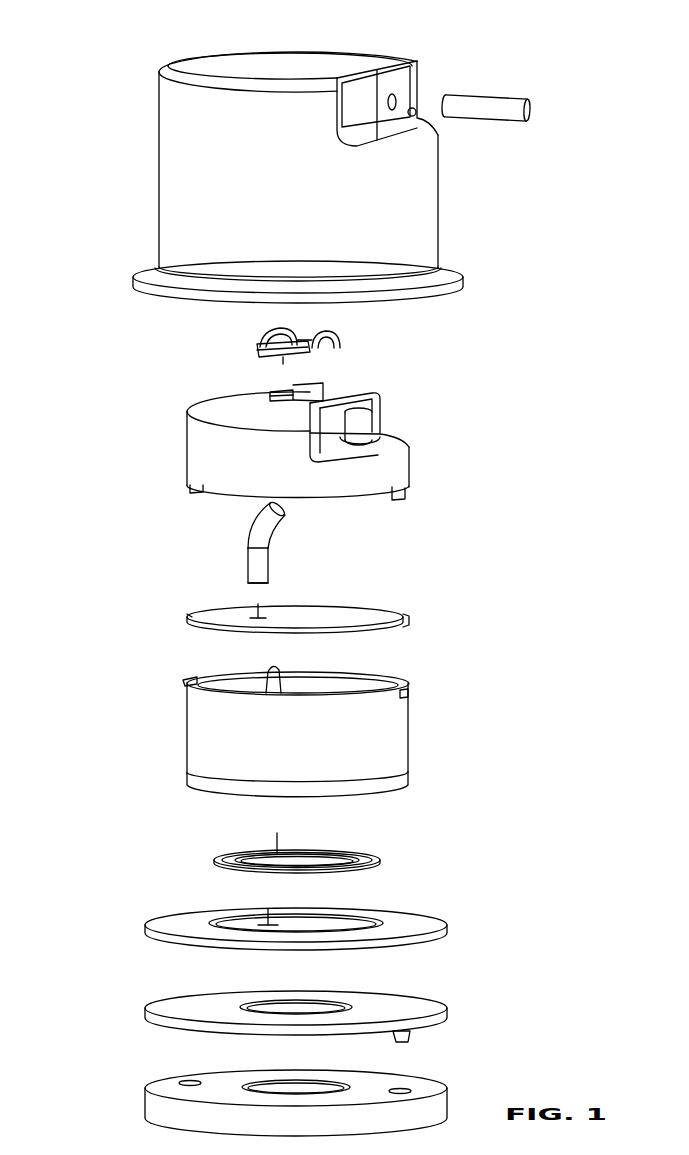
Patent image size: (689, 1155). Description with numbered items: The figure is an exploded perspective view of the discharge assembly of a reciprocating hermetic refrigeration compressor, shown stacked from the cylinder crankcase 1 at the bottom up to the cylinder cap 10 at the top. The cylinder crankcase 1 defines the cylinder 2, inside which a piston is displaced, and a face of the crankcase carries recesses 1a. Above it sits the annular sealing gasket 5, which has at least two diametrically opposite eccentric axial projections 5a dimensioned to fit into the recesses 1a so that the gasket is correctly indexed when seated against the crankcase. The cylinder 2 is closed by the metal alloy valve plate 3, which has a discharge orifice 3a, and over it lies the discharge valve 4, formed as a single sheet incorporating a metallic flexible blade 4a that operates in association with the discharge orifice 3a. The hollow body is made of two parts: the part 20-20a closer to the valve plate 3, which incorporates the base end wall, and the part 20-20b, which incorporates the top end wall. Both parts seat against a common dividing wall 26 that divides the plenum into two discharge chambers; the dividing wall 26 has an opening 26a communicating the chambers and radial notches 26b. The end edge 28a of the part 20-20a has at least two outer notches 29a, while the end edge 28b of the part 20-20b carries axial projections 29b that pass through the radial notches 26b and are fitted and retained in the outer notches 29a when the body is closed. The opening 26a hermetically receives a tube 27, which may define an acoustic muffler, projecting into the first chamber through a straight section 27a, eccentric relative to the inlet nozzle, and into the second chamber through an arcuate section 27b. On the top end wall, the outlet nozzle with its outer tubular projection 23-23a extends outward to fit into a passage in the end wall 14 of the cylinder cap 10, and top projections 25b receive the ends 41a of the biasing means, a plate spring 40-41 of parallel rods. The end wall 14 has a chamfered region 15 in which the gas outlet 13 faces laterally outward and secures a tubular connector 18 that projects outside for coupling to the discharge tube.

The cylinder cap 10 is at (148, 172).
The end wall 14 is at (262, 60).
The gas outlet 13 is at (400, 101).
The chamfered region 15 is at (416, 108).
The tubular connector 18 is at (488, 99).
The biasing means / plate spring 40-41 is at (257, 338).
The ends of plate spring 41a is at (283, 358).
The top projection 25b is at (277, 391).
The outlet nozzle / outer tubular projection 23-23a is at (380, 406).
The hollow body part incorporating top end wall 20-20b is at (300, 459).
The end edge of part 20b 28b is at (352, 500).
The axial projections 29b is at (409, 497).
The tube 27 is at (265, 548).
The arcuate section 27b is at (282, 528).
The straight section 27a is at (271, 572).
The common dividing wall 26 is at (297, 632).
The opening 26a is at (258, 604).
The radial notches 26b is at (194, 615).
The hollow body part incorporating base end wall 20-20a is at (299, 760).
The end edge of part 20a 28a is at (273, 668).
The outer notches 29a is at (185, 678).
The discharge valve 4 is at (323, 839).
The metallic flexible blade 4a is at (278, 845).
The valve plate 3 is at (335, 914).
The discharge orifice 3a is at (268, 909).
The annular sealing gasket 5 is at (340, 1004).
The eccentric axial projections 5a is at (405, 1042).
The cylinder crankcase 1 is at (321, 1087).
The recesses 1a is at (191, 1080).
The cylinder 2 is at (301, 1086).